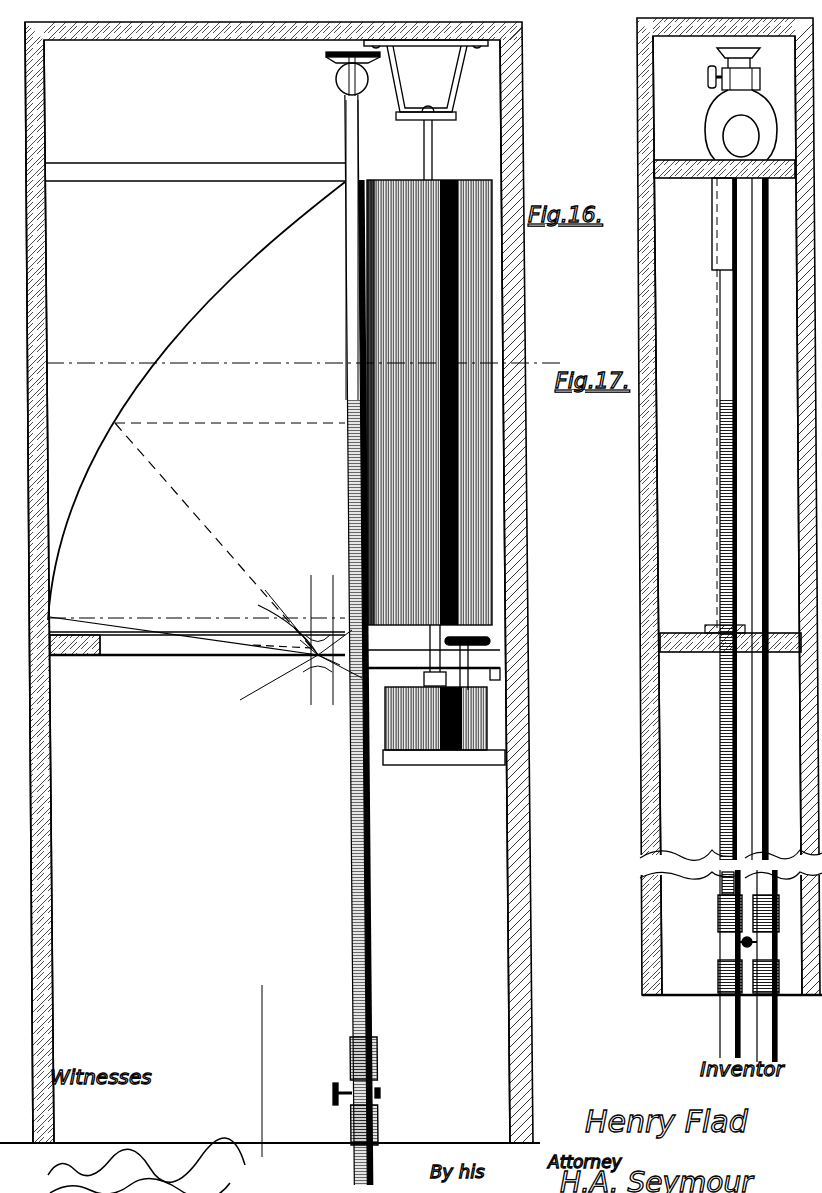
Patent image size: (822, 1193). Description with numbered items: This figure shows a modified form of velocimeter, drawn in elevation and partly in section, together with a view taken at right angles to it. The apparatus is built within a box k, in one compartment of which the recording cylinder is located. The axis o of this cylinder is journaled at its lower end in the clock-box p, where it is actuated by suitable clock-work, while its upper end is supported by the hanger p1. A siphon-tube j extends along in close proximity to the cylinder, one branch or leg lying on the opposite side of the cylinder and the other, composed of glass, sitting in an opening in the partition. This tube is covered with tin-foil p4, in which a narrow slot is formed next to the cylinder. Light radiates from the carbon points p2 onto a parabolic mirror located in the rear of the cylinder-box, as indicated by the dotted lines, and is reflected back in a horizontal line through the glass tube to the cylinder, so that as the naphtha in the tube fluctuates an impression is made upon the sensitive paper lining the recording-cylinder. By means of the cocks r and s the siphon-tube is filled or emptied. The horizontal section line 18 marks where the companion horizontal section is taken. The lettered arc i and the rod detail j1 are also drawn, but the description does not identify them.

In FIG. 16, the section line 18 is at (303, 361).
In FIG. 16, the arc path of pendulum arm i is at (196, 418).
In FIG. 16, the carbon points p2 is at (316, 664).
In FIG. 16, the cock r is at (337, 79).
In FIG. 16, the siphon-tube j is at (349, 640).
In FIG. 16, the cock s is at (349, 1094).
In FIG. 17, the cock s is at (743, 943).
In FIG. 16, the tin-foil p4 is at (346, 245).
In FIG. 17, the tin-foil p4 is at (726, 519).
In FIG. 16, the hanger p1 is at (426, 110).
In FIG. 16, the box k is at (336, 475).
In FIG. 17, the box k is at (680, 450).
In FIG. 16, the axis o is at (430, 637).
In FIG. 16, the clock-box p is at (505, 835).
In FIG. 17, the rod sleeve j1 is at (730, 519).